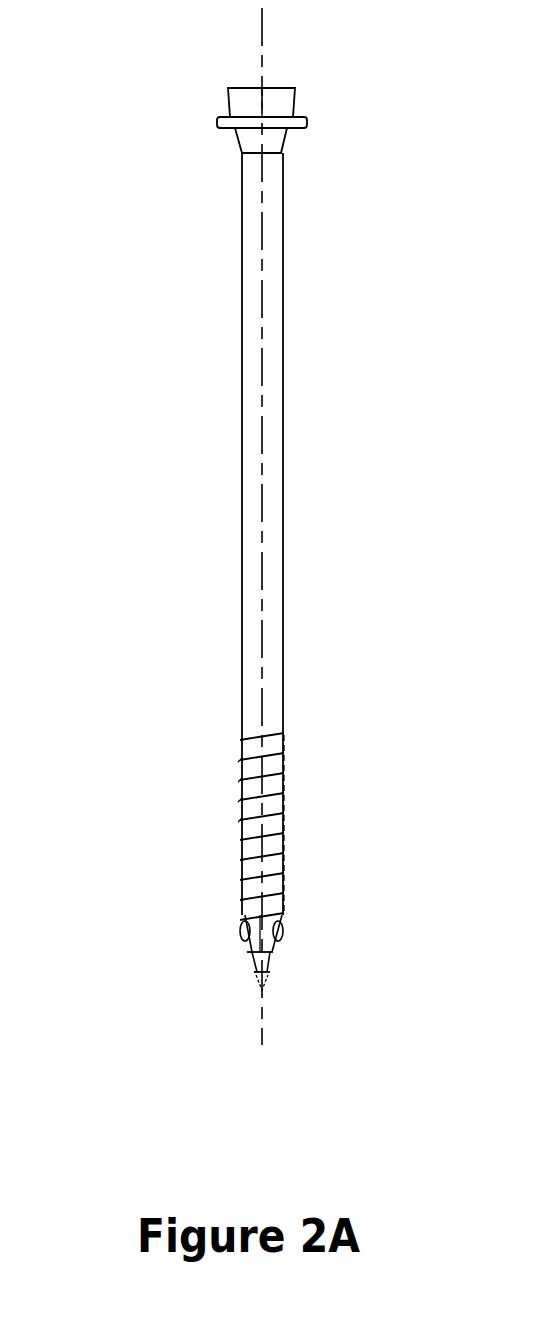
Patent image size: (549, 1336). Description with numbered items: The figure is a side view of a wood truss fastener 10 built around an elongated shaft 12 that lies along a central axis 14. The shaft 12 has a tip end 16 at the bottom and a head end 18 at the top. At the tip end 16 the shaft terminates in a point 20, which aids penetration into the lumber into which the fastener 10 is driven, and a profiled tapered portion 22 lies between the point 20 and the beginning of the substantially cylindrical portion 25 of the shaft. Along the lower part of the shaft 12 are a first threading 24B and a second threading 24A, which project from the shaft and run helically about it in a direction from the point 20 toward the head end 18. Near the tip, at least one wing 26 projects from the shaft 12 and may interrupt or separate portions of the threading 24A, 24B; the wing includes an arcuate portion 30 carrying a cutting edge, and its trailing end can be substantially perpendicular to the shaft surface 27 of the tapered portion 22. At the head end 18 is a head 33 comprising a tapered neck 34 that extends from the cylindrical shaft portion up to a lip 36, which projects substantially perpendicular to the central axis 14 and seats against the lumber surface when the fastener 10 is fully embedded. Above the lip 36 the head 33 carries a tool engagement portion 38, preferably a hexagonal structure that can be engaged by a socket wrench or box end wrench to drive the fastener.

The fastener 10 is at (122, 352).
The shaft 12 is at (283, 572).
The central axis 14 is at (263, 338).
The tip end 16 is at (285, 985).
The head end 18 is at (290, 114).
The point 20 is at (262, 992).
The tapered portion 22 is at (247, 958).
The second threading 24A is at (272, 953).
The first threading 24B is at (243, 793).
The substantially cylindrical portion 25 is at (257, 816).
The wing 26 is at (247, 940).
The shaft surface of the tapered portion 27 is at (282, 743).
The arcuate portion 30 is at (282, 928).
The head 33 is at (293, 88).
The tapered neck 34 is at (237, 138).
The lip 36 is at (217, 119).
The tool engagement portion 38 is at (232, 88).